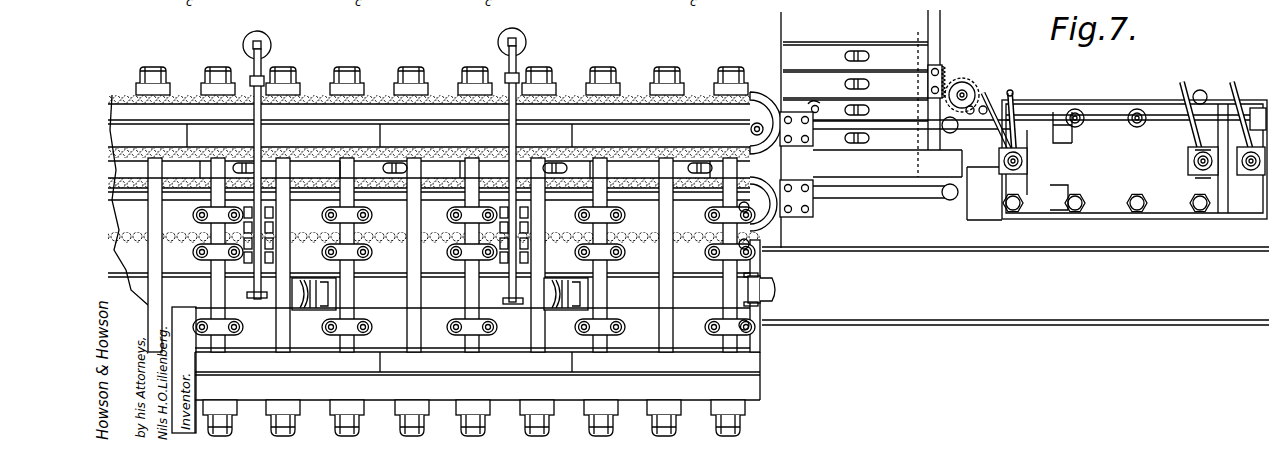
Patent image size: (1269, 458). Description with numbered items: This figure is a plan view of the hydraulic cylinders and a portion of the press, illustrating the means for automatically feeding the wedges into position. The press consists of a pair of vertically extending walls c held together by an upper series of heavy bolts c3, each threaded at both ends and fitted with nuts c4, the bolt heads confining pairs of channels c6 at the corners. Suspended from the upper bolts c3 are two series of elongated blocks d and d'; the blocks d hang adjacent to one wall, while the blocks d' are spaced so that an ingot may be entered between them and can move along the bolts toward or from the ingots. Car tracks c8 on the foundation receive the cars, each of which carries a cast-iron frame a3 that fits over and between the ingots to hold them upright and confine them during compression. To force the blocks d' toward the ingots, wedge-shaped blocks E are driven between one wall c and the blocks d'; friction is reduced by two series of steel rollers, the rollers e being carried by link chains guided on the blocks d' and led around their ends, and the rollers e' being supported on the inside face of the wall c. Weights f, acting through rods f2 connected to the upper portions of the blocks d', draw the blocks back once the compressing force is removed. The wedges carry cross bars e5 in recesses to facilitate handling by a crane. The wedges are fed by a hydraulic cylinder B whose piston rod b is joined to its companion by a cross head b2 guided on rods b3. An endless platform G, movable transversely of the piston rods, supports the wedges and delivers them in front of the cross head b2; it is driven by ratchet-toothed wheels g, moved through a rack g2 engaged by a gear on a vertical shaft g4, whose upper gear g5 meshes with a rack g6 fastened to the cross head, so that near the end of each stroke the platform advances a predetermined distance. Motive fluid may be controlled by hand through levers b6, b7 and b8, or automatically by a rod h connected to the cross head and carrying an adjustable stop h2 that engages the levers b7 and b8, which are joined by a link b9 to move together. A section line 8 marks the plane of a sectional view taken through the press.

The vertically extending walls c is at (650, 138).
The upper series of bolts c3 is at (678, 326).
The nuts c4 is at (218, 68).
The channels c6 is at (470, 408).
The car tracks c8 is at (972, 251).
The weights f is at (271, 45).
The rods f2 is at (470, 132).
The steel rollers e is at (472, 255).
The steel rollers e' is at (476, 151).
The cross bars e5 is at (880, 141).
The driving wheels g is at (638, 92).
The second rack g2 is at (946, 76).
The vertical shaft g4 is at (1025, 90).
The second gear g5 is at (966, 88).
The rack g6 is at (825, 106).
The wedge-shaped blocks E is at (509, 113).
The elongated blocks d is at (474, 333).
The elongated blocks d' is at (462, 239).
The frame a3 is at (275, 312).
The section line 8— 8 is at (780, 305).
The platform G is at (860, 129).
The piston rod b is at (911, 147).
The cross heads b2 is at (800, 166).
The rods or guides b3 is at (852, 196).
The lever b6 is at (1011, 93).
The lever b7 is at (1188, 84).
The lever b8 is at (1238, 86).
The link b9 is at (1195, 140).
The rod h is at (1122, 126).
The adjustable stop h2 is at (1255, 117).
The hydraulic cylinder B is at (1117, 160).